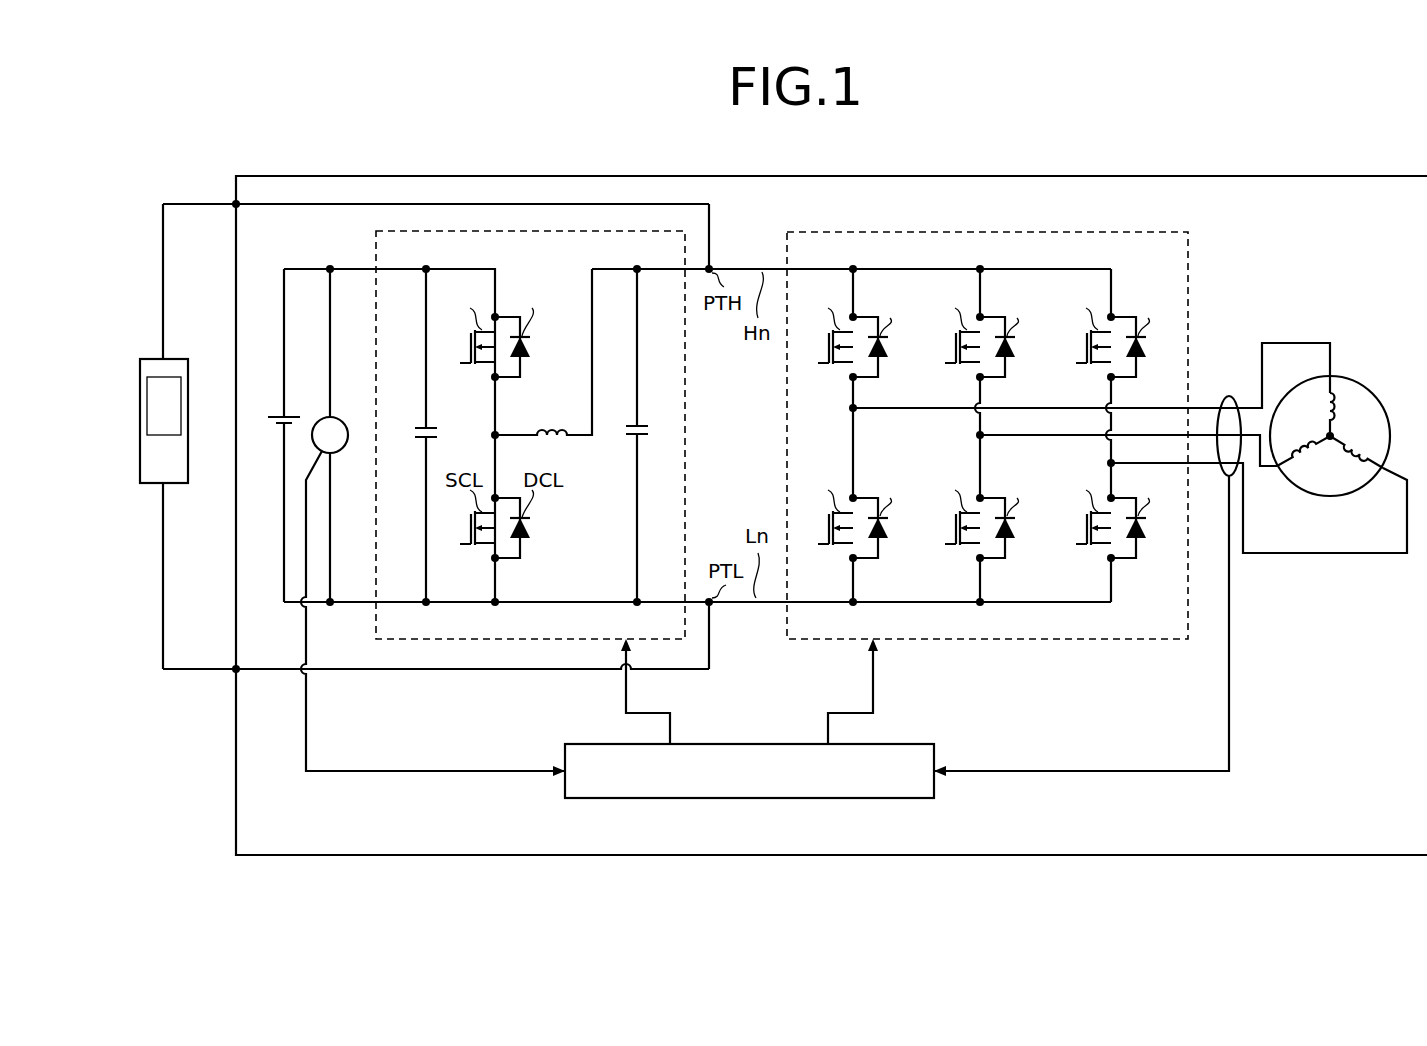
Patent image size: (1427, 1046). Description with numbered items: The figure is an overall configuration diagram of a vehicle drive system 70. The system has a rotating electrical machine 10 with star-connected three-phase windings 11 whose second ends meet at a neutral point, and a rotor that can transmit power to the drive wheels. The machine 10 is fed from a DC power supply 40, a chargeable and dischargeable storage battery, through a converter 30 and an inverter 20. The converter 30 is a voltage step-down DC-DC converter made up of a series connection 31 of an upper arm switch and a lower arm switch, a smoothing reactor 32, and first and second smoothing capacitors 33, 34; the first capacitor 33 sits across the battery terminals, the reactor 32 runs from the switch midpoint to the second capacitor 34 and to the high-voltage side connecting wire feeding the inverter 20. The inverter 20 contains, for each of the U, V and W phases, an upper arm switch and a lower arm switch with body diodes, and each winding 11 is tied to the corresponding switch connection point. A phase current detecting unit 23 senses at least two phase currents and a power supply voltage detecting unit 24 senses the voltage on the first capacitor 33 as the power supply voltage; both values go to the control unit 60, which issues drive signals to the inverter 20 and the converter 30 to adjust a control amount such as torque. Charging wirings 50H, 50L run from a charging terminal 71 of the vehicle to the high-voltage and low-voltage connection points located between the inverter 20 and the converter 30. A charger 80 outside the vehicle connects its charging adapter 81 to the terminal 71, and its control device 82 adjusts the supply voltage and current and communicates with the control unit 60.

The rotating electrical machine 10 is at (1386, 396).
The three-phase windings 11 is at (1322, 394).
The inverter 20 is at (1190, 256).
The phase current detecting unit 23 is at (1228, 397).
The power supply voltage detecting unit 24 is at (322, 418).
The converter 30 is at (376, 243).
The series connection 31 is at (514, 286).
The smoothing reactor 32 is at (554, 430).
The first smoothing capacitor 33 is at (423, 424).
The second smoothing capacitor 34 is at (633, 424).
The DC power supply 40 is at (274, 415).
The high-voltage side charging wiring 50H is at (711, 232).
The low-voltage side charging wiring 50L is at (711, 640).
The control unit 60 is at (928, 744).
The drive system 70 is at (424, 176).
The charging terminal 71 is at (240, 207).
The charger 80 is at (147, 358).
The charging adapter 81 is at (192, 204).
The control device 82 is at (147, 402).